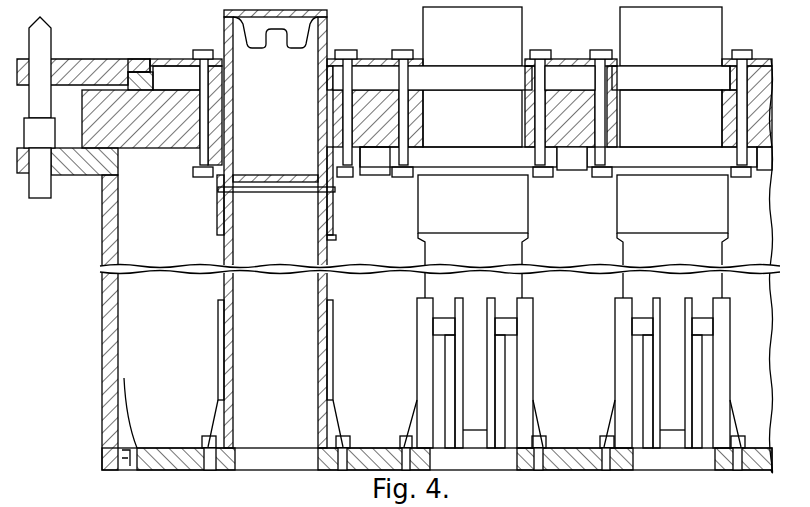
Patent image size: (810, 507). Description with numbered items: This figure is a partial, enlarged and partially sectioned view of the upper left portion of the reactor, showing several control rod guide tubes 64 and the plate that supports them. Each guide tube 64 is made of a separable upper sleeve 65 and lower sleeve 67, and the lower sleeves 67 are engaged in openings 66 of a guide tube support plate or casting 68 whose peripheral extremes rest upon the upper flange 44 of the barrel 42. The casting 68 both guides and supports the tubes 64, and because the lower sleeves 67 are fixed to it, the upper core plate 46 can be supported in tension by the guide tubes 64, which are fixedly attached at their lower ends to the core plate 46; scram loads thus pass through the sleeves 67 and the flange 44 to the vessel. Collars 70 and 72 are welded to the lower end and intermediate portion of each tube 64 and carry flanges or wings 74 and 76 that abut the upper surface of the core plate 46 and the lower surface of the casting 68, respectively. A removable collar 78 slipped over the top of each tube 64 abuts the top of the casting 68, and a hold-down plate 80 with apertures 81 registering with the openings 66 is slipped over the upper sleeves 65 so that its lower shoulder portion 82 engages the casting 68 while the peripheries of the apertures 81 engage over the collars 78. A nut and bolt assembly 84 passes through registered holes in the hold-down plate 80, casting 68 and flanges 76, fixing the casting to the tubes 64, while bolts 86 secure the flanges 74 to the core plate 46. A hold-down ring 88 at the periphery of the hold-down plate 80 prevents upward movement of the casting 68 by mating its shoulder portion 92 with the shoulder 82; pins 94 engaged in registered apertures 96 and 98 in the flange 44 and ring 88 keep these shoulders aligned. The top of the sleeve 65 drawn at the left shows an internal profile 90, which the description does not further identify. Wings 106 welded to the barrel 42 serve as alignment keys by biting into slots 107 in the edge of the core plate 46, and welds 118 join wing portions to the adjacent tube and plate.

The barrel 42 is at (118, 317).
The upper flange 44 is at (68, 170).
The upper core plate 46 is at (390, 448).
The control rod guide tube 64 is at (521, 250).
The upper sleeve 65 is at (224, 22).
The opening 66 is at (234, 114).
The lower sleeve 67 is at (428, 250).
The guide tube support plate 68 is at (590, 88).
The collar 70 is at (220, 340).
The collar 72 is at (222, 210).
The flange 74 is at (334, 430).
The flange 76 is at (358, 172).
The removable collar 78 is at (327, 77).
The hold-down plate 80 is at (370, 59).
The aperture 81 is at (725, 58).
The lower shoulder portion 82 is at (154, 80).
The nut and bolt assembly 84 is at (205, 50).
The bolt 86 is at (207, 432).
The hold-down ring 88 is at (93, 60).
The T-slot 90 is at (280, 48).
The shoulder portion 92 is at (138, 60).
The pin 94 is at (49, 106).
The aperture 96 is at (60, 176).
The aperture 98 is at (56, 59).
The wing 106 is at (135, 400).
The slot 107 is at (141, 448).
The weld 118 is at (333, 238).